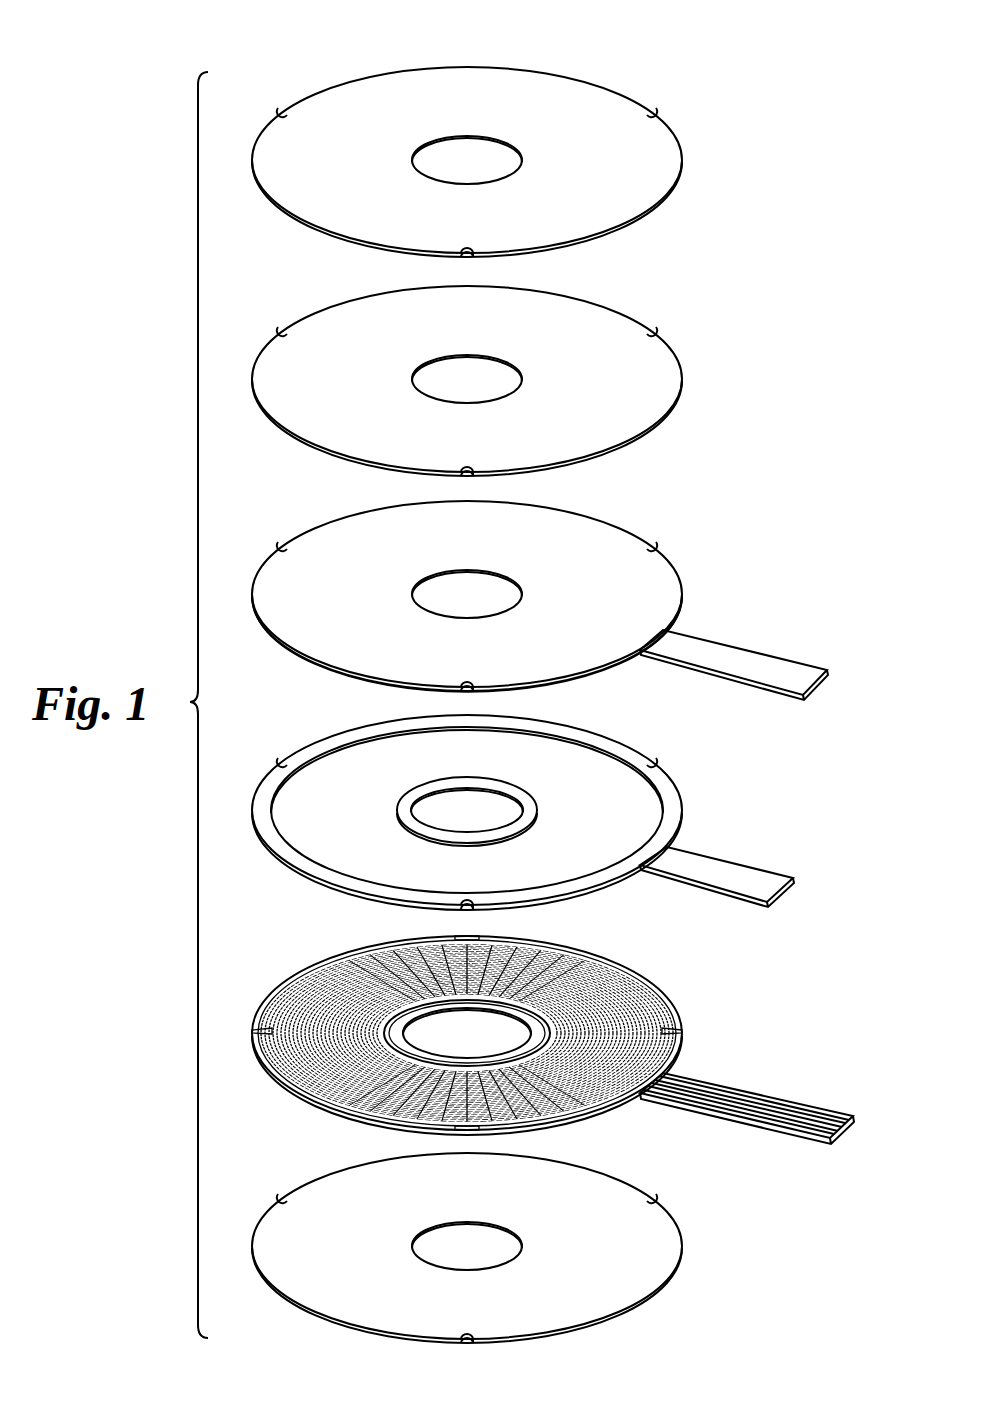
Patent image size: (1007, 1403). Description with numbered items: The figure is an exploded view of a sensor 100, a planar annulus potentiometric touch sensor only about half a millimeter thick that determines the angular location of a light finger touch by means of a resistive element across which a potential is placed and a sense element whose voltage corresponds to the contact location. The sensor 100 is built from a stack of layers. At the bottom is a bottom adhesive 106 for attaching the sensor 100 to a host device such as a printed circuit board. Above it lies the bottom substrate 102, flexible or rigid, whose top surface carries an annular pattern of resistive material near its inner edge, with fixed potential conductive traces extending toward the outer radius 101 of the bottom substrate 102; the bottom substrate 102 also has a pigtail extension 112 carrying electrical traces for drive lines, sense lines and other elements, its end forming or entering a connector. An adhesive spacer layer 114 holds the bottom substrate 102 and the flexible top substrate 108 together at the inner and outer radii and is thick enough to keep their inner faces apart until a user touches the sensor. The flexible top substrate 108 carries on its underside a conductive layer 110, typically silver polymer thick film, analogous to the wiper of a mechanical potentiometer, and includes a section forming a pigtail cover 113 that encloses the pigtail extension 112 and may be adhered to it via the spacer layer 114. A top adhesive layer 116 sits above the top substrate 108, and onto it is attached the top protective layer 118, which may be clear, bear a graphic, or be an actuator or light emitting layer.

The sensor 100 is at (742, 47).
The top protective layer 118 is at (330, 92).
The top adhesive layer 116 is at (328, 306).
The flexible top substrate 108 is at (328, 523).
The pigtail cover 113 is at (750, 652).
The conductive layer 110 is at (330, 668).
The adhesive spacer layer 114 is at (623, 743).
The outer radius 101 is at (617, 960).
The bottom substrate 102 is at (327, 955).
The pigtail extension 112 is at (753, 1087).
The bottom adhesive 106 is at (327, 1173).